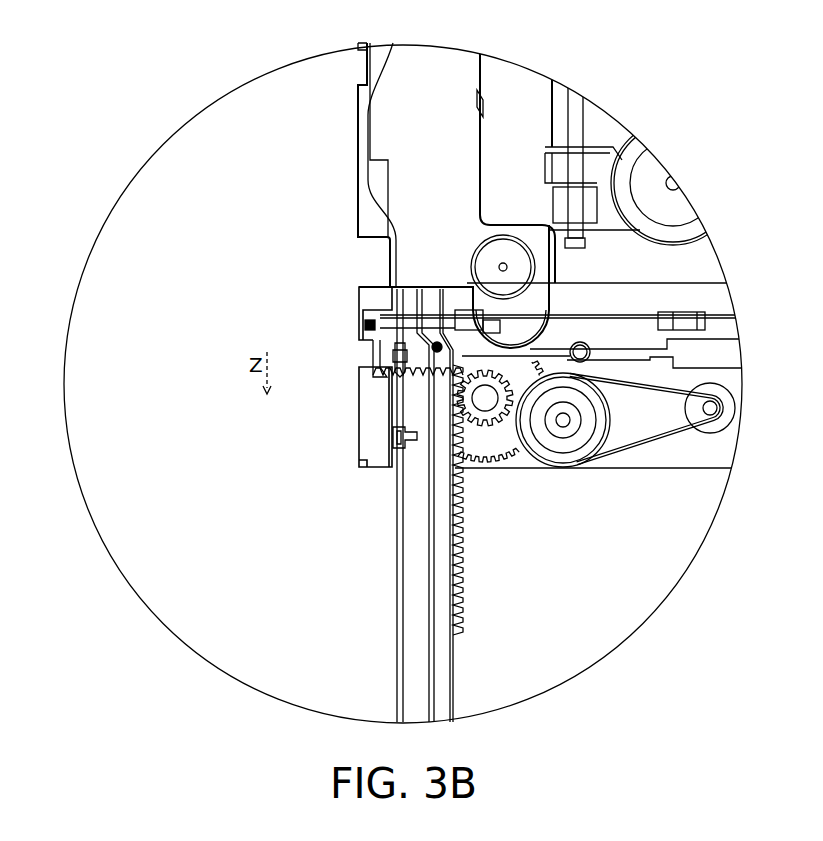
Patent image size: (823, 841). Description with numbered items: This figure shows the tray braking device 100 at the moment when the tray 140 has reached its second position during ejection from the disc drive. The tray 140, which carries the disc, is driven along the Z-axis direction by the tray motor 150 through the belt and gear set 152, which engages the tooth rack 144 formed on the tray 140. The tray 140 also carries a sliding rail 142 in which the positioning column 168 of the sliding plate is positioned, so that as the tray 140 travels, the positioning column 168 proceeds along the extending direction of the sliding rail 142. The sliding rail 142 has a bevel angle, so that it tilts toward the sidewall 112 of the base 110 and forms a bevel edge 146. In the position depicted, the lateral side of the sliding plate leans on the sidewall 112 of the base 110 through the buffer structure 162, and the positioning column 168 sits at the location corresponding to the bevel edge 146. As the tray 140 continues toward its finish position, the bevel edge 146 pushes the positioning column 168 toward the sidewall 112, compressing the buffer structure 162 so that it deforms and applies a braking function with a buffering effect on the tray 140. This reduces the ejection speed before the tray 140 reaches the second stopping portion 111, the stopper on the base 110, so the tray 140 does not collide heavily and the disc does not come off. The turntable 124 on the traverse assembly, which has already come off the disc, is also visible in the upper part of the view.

The tray braking device 100 is at (48, 31).
The base 110 is at (358, 165).
The second stopping portion 111 is at (390, 442).
The sidewall 112 is at (358, 313).
The turntable 124 is at (653, 167).
The tray 140 is at (397, 593).
The sliding rail 142 is at (428, 540).
The tooth rack 144 is at (452, 587).
The bevel edge 146 is at (428, 322).
The tray motor 150 is at (735, 410).
The belt and gear set 152 is at (563, 476).
The buffer structure 162 is at (363, 325).
The positioning column 168 is at (400, 355).